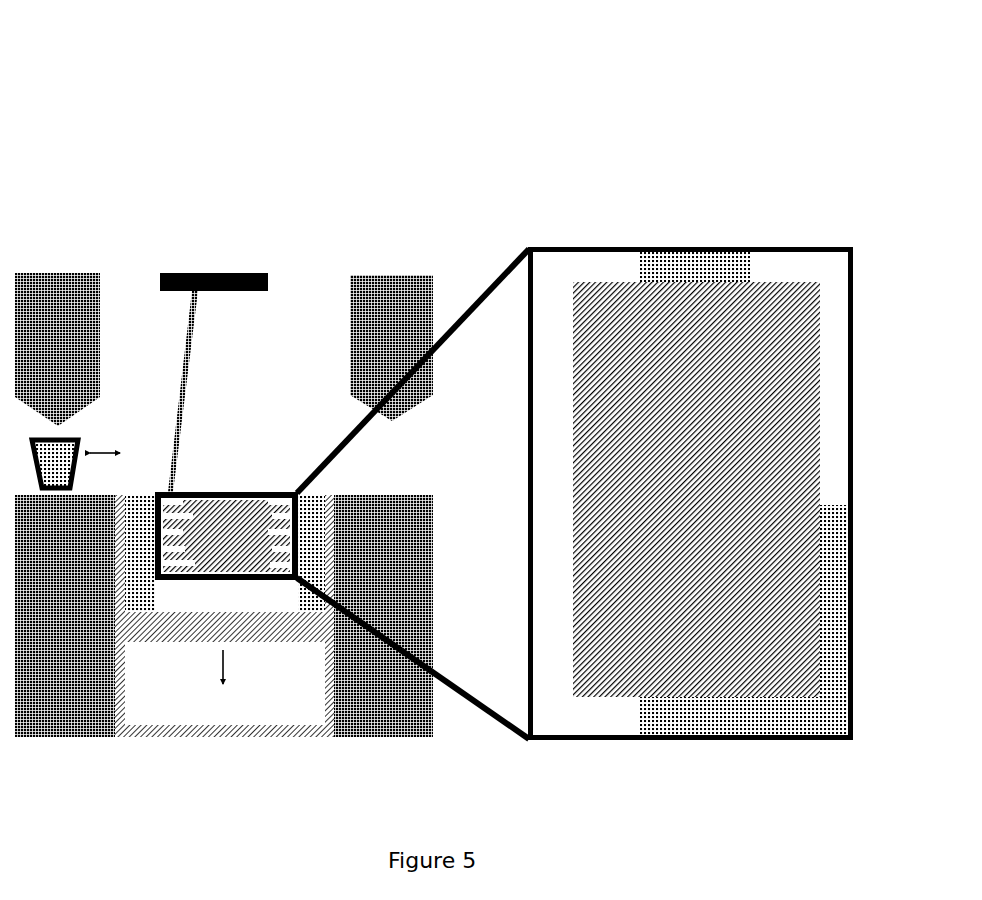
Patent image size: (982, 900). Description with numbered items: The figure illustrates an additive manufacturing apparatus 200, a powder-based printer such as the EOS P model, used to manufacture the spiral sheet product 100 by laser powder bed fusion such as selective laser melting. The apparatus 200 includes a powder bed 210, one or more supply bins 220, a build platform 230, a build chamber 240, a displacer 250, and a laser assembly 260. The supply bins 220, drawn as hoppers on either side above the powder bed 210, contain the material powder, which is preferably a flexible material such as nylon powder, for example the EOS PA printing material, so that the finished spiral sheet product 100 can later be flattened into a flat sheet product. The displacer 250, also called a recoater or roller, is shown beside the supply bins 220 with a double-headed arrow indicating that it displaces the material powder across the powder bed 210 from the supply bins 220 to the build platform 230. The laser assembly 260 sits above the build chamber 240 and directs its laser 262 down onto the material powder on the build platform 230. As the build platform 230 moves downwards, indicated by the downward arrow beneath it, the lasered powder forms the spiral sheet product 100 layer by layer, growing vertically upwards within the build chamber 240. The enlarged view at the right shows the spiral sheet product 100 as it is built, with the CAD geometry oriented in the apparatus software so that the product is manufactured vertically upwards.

The additive manufacturing apparatus 200 is at (200, 145).
The powder bed 210 is at (110, 498).
The supply bins 220 is at (30, 293).
The build platform 230 is at (297, 628).
The build chamber 240 is at (312, 543).
The displacer 250 is at (78, 440).
The laser assembly 260 is at (172, 273).
The laser 262 is at (178, 398).
The spiral sheet product 100 is at (228, 490).